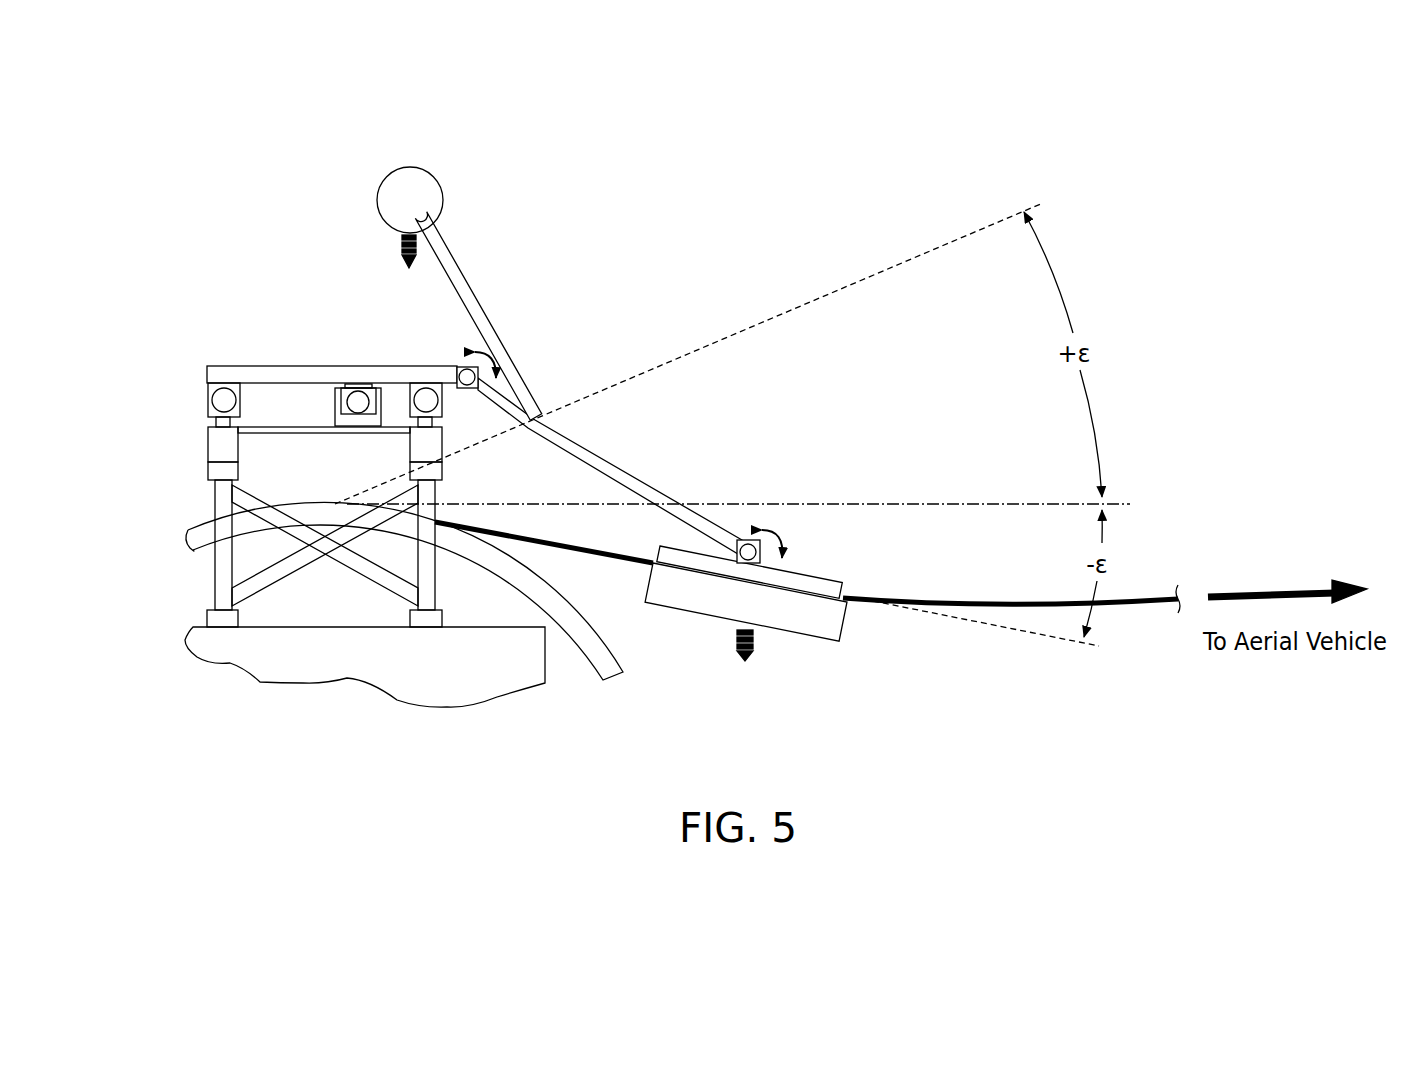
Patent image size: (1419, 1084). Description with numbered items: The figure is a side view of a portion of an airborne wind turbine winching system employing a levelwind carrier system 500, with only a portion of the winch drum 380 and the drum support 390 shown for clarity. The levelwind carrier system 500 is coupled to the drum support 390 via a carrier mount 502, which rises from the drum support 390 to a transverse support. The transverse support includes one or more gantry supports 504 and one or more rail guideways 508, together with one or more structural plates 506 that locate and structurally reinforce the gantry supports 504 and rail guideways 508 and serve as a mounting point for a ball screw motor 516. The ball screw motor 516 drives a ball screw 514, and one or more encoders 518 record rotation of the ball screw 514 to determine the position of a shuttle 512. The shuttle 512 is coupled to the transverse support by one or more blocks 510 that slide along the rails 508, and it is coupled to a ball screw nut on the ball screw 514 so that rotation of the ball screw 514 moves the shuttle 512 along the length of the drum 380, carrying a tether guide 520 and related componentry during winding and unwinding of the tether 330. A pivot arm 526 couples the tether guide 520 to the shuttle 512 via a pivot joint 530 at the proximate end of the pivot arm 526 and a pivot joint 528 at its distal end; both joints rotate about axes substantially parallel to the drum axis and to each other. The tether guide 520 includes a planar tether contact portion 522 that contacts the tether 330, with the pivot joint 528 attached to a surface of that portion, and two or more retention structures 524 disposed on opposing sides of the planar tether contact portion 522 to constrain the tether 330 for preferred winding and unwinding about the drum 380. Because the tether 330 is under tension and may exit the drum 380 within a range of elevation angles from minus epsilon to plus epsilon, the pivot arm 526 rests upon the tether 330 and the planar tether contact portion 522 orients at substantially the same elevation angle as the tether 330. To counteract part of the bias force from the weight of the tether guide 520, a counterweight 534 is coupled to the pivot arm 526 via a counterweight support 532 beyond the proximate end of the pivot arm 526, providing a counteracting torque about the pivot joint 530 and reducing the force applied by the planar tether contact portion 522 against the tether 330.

The levelwind carrier system 500 is at (602, 297).
The carrier mount 502 is at (223, 570).
The gantry supports 504 is at (220, 442).
The structural plates 506 is at (335, 430).
The rail guideways 508 is at (210, 383).
The blocks 510 is at (217, 395).
The shuttle 512 is at (240, 375).
The ball screw 514 is at (358, 395).
The ball screw motor 516 is at (335, 393).
The encoders 518 is at (343, 388).
The tether guide 520 is at (772, 597).
The planar tether contact portion 522 is at (805, 573).
The retention structures 524 is at (782, 632).
The pivot arm 526 is at (639, 458).
The pivot joint 528 is at (752, 525).
The pivot joint 530 is at (461, 361).
The counterweight support 532 is at (467, 266).
The counterweight 534 is at (403, 207).
The tether 330 is at (972, 603).
The winch drum 380 is at (640, 678).
The drum support 390 is at (450, 675).